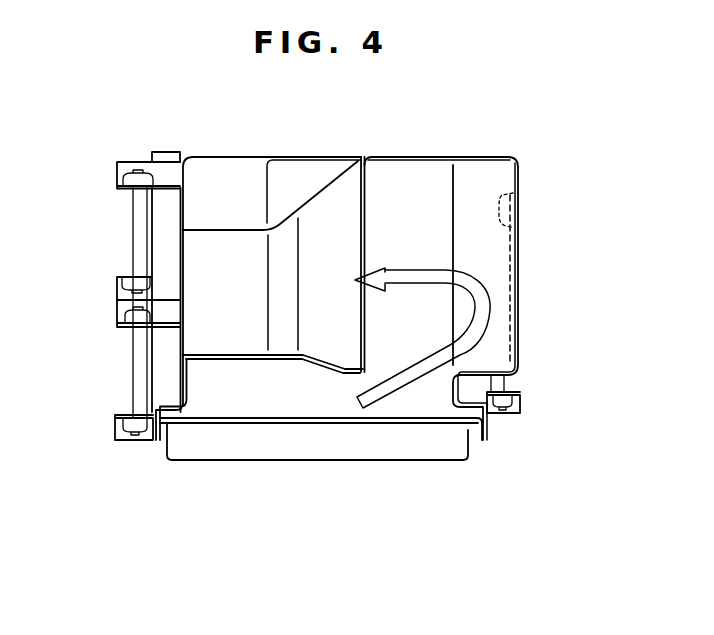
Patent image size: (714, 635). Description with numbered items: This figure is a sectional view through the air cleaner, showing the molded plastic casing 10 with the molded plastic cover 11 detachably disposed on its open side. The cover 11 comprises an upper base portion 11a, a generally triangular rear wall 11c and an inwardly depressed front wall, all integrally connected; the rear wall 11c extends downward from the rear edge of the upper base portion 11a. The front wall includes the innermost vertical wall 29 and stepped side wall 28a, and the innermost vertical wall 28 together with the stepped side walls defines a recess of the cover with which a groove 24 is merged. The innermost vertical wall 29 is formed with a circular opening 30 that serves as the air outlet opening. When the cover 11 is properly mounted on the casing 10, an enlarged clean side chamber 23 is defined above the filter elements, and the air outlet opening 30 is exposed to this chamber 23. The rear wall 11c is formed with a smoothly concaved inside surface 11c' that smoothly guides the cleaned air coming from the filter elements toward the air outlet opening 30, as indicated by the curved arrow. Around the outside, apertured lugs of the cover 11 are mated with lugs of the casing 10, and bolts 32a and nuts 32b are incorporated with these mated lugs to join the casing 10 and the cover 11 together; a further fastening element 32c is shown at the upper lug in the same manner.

The casing 10 is at (268, 450).
The cover 11 is at (382, 157).
The upper base portion 11a is at (417, 156).
The rear wall 11c is at (549, 280).
The concaved inside surface 11c' is at (546, 210).
The clean side chamber 23 is at (420, 192).
The groove 24 is at (217, 354).
The innermost vertical wall 28 is at (220, 228).
The stepped side wall 28a is at (280, 167).
The innermost vertical wall 29 is at (360, 187).
The circular opening 30 is at (360, 215).
The bolt 32a is at (123, 317).
The nut 32b is at (122, 280).
The mounting bracket 32c is at (127, 182).